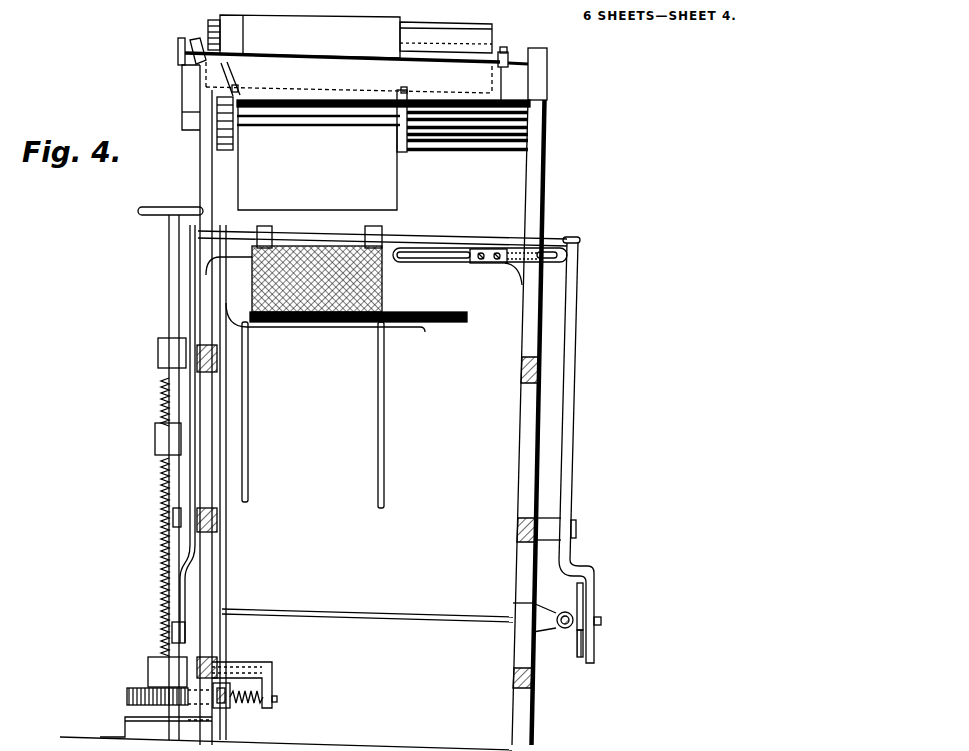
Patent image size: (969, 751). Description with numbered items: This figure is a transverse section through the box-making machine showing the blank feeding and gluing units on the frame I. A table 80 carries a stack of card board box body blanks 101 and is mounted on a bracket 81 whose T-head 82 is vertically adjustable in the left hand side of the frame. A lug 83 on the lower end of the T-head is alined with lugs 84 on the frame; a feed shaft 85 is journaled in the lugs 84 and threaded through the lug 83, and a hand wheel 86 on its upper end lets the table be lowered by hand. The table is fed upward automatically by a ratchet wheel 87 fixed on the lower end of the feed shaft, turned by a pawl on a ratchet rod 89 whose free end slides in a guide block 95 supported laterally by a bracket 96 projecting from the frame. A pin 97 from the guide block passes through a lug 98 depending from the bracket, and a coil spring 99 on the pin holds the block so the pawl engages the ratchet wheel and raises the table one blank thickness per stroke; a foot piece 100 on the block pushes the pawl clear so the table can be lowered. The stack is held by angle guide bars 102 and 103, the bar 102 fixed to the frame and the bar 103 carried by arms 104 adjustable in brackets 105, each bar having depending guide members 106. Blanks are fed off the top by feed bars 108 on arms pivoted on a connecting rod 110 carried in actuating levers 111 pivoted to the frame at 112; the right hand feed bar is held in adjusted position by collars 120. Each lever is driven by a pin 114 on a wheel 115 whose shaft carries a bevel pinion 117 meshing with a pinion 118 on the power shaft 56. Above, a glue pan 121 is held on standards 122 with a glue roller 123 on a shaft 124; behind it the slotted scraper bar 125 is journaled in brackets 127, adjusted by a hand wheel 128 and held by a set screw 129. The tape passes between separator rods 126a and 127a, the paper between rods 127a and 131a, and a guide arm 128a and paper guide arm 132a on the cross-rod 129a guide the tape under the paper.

The frame I is at (535, 189).
The power shaft 56 is at (575, 612).
The table 80 is at (463, 325).
The bracket 81 is at (332, 329).
The T-head 82 is at (206, 325).
The lug 83 is at (156, 438).
The lugs 84 is at (150, 665).
The feed shaft 85 is at (182, 572).
The hand wheel 86 is at (140, 210).
The ratchet wheel 87 is at (160, 352).
The ratchet rod 89 is at (230, 686).
The guide block 95 is at (228, 708).
The bracket 96 is at (236, 662).
The pin 97 is at (278, 699).
The lug 98 is at (272, 690).
The coil spring 99 is at (255, 705).
The foot piece 100 is at (124, 722).
The stack of card board box body blanks 101 is at (300, 250).
The guide bar 102 is at (253, 226).
The guide bar 103 is at (396, 253).
The arms 104 is at (452, 248).
The brackets 105 is at (503, 268).
The depending guide members 106 is at (250, 429).
The feed bars 108 is at (268, 226).
The connecting rod 110 is at (331, 231).
The actuating levers 111 is at (188, 260).
The pivot 112 is at (173, 515).
The pin 114 is at (161, 605).
The wheel 115 is at (186, 595).
The bevel pinion 117 is at (566, 629).
The pinion 118 is at (561, 612).
The collars 120 is at (386, 230).
The glue pan 121 is at (463, 79).
The standards 122 is at (546, 70).
The glue roller 123 is at (446, 37).
The shaft 124 is at (538, 58).
The slotted bar 125 is at (299, 56).
The separator rod 126a is at (472, 152).
The brackets 127 is at (198, 44).
The separator rod 127a is at (522, 141).
The hand wheel 128 is at (178, 48).
The guide arm 128a is at (240, 138).
The set screw 129 is at (505, 50).
The cross-rod 129a is at (326, 100).
The separator rod 131a is at (522, 129).
The paper guide arm 132a is at (398, 140).